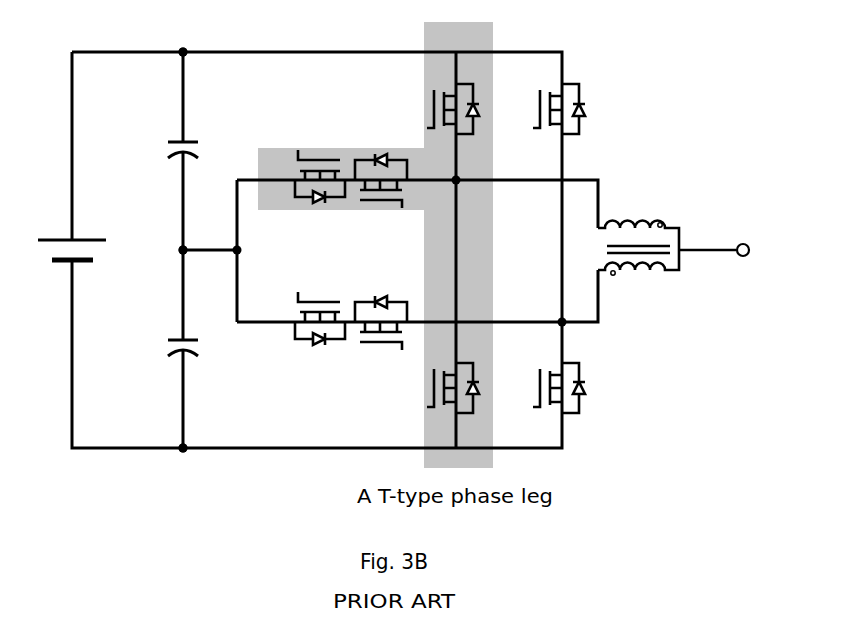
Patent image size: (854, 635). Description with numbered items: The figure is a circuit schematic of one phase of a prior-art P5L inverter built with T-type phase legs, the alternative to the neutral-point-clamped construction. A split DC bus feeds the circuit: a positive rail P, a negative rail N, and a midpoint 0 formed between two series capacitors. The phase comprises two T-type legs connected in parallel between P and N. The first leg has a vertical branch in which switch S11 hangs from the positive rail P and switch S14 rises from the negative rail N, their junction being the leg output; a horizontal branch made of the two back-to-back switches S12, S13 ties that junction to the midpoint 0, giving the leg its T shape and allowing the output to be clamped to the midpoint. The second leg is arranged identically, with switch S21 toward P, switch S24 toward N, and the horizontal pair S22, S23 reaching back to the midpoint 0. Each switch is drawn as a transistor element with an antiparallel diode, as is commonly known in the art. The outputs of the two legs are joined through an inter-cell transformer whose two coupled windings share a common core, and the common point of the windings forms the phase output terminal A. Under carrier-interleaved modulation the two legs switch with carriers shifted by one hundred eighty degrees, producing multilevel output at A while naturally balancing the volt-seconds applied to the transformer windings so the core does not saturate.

The vertical leg switch S11 (MOSFET with body diode) S11 is at (435, 109).
The midpoint bidirectional switch S12 (MOSFET) S12 is at (380, 166).
The midpoint bidirectional switch S13 (MOSFET) S13 is at (320, 164).
The vertical leg switch S14 (MOSFET with body diode) S14 is at (435, 388).
The second leg switch S21 (MOSFET with body diode) S21 is at (542, 109).
The midpoint bidirectional switch S22 (MOSFET) S22 is at (380, 309).
The midpoint bidirectional switch S23 (MOSFET) S23 is at (320, 306).
The second leg switch S24 (MOSFET with body diode) S24 is at (542, 388).
The positive DC bus node P is at (165, 41).
The DC bus midpoint (neutral) node 0 is at (166, 252).
The negative DC bus node N is at (164, 464).
The phase output terminal A (coupled inductor output) A is at (673, 248).